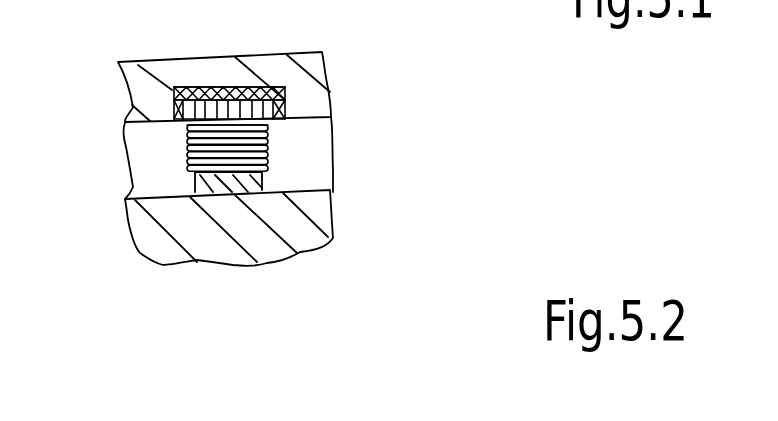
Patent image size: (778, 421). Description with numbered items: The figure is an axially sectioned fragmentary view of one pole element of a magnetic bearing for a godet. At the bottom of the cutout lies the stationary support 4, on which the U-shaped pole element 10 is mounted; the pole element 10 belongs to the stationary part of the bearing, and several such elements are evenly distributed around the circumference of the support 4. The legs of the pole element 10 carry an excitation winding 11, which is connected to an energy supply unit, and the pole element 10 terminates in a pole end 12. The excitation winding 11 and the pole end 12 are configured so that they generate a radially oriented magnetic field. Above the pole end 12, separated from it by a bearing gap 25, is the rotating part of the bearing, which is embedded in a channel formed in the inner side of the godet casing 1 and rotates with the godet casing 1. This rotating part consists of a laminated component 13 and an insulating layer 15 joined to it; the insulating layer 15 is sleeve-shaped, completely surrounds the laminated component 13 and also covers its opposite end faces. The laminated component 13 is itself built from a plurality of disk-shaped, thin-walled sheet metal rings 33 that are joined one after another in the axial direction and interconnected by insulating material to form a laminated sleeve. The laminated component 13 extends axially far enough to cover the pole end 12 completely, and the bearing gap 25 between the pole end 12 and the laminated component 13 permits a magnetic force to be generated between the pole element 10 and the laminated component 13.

The godet casing 1 is at (139, 83).
The support 4 is at (236, 253).
The pole element 10 is at (253, 194).
The excitation winding 11 is at (268, 152).
The pole end 12 is at (286, 91).
The laminated component 13 is at (268, 128).
The insulating layer 15 is at (237, 112).
The bearing gap 25 is at (187, 127).
The sheet metal ring 33 is at (283, 92).